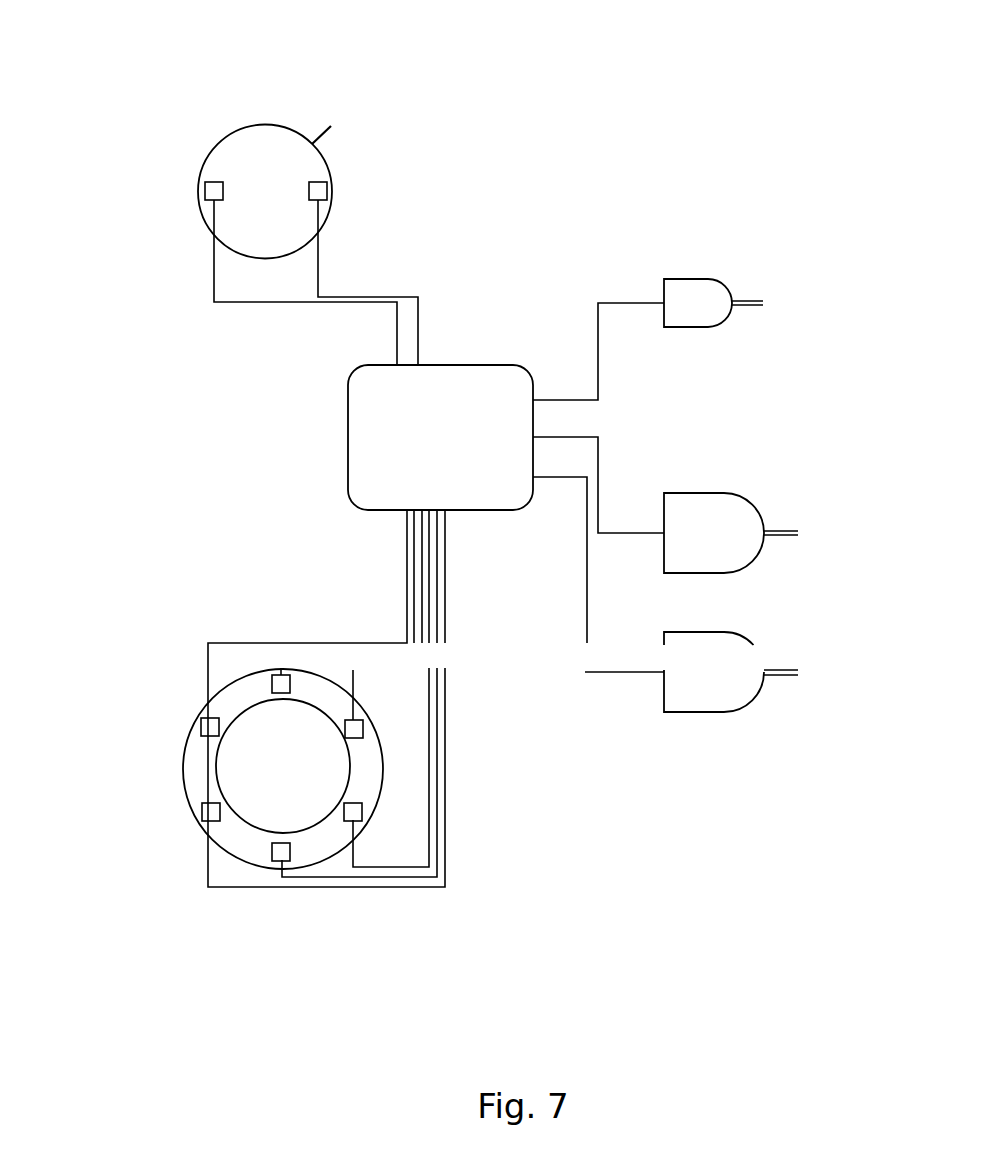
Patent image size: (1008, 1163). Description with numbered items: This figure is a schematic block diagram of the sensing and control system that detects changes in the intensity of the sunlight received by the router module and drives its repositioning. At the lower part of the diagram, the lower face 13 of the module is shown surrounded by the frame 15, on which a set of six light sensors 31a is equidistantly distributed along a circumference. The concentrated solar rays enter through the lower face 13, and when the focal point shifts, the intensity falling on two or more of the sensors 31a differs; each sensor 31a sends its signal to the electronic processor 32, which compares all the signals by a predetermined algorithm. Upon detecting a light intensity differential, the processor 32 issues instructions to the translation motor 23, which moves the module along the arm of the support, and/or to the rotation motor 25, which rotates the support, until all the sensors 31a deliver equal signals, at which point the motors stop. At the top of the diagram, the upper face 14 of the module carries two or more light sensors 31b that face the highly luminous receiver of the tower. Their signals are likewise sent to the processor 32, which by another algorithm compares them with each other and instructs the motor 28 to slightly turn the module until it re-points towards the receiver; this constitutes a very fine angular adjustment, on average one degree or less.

The upper face 14 is at (262, 128).
The light sensors 31b is at (197, 193).
The electronic processor 32 is at (440, 437).
The motor 28 is at (692, 278).
The rotation motor 25 is at (700, 493).
The translation motor 23 is at (698, 713).
The frame 15 is at (192, 763).
The lower face 13 is at (283, 766).
The light sensors 31a is at (200, 725).